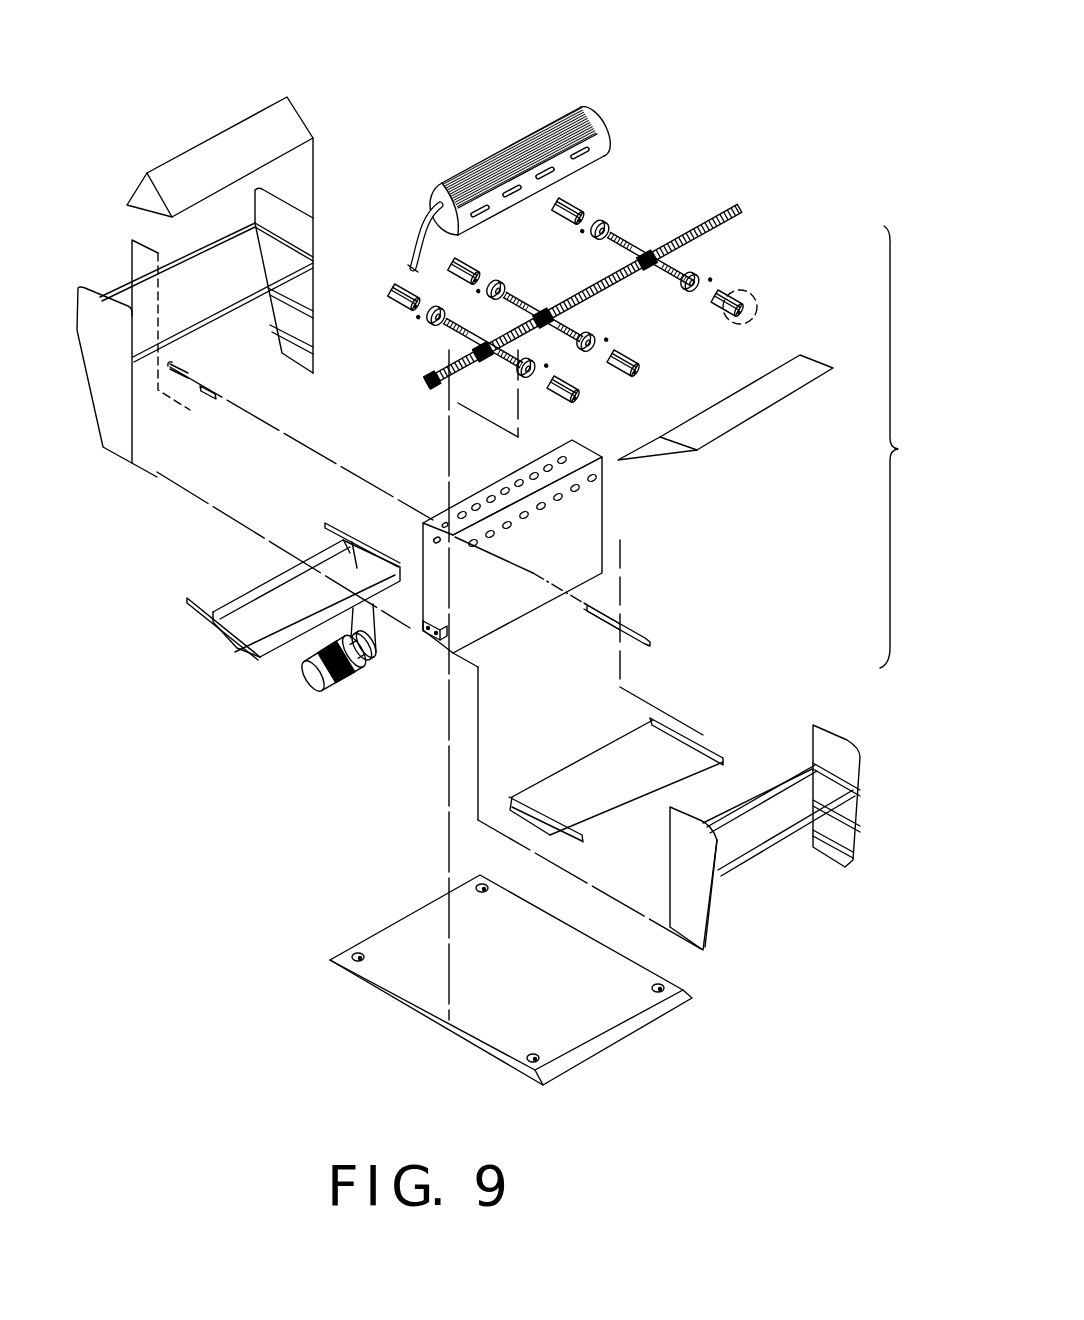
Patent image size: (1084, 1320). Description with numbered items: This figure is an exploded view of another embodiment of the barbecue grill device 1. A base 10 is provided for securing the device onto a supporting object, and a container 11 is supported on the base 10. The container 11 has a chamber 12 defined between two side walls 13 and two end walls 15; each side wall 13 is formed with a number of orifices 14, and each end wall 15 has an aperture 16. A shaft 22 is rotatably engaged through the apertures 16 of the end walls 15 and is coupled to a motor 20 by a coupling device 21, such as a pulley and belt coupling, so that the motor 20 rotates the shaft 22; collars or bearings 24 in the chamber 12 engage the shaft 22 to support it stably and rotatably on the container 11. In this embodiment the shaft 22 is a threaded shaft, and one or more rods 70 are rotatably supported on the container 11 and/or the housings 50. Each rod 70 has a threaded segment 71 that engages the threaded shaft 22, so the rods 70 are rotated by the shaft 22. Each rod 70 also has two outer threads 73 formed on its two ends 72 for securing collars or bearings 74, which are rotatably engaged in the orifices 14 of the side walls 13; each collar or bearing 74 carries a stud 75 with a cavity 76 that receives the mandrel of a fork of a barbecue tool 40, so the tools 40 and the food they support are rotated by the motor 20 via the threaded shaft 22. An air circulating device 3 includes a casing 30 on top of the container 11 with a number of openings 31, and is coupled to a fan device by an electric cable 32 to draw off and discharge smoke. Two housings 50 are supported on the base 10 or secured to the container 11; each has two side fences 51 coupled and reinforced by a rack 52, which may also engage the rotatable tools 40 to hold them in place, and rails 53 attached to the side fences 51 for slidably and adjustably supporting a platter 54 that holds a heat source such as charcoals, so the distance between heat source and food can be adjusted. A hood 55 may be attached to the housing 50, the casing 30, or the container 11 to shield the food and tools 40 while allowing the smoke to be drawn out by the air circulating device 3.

The barbecue grill device 1 is at (800, 243).
The air circulating device 3 is at (508, 156).
The base 10 is at (418, 938).
The container 11 is at (517, 554).
The chamber 12 is at (546, 471).
The side walls 13 is at (587, 562).
The orifices 14 is at (578, 490).
The end walls 15 is at (447, 592).
The aperture 16 is at (433, 538).
The motor 20 is at (343, 680).
The coupling device 21 is at (373, 630).
The threaded shaft 22 is at (430, 383).
The collars or bearings 24 is at (566, 337).
The casing 30 is at (547, 125).
The openings 31 is at (600, 140).
The electric cable 32 is at (422, 240).
The barbecue tools 40 is at (617, 622).
The housings 50 is at (468, 560).
The side fences 51 is at (700, 920).
The rack 52 is at (780, 840).
The rails 53 is at (845, 860).
The platter 54 is at (600, 770).
The hood 55 is at (758, 405).
The rods 70 is at (643, 250).
The threaded segment 71 is at (648, 256).
The ends 72 is at (663, 270).
The outer threads 73 is at (670, 282).
The collars or bearings 74 is at (705, 270).
The stud 75 is at (717, 310).
The cavity 76 is at (752, 305).